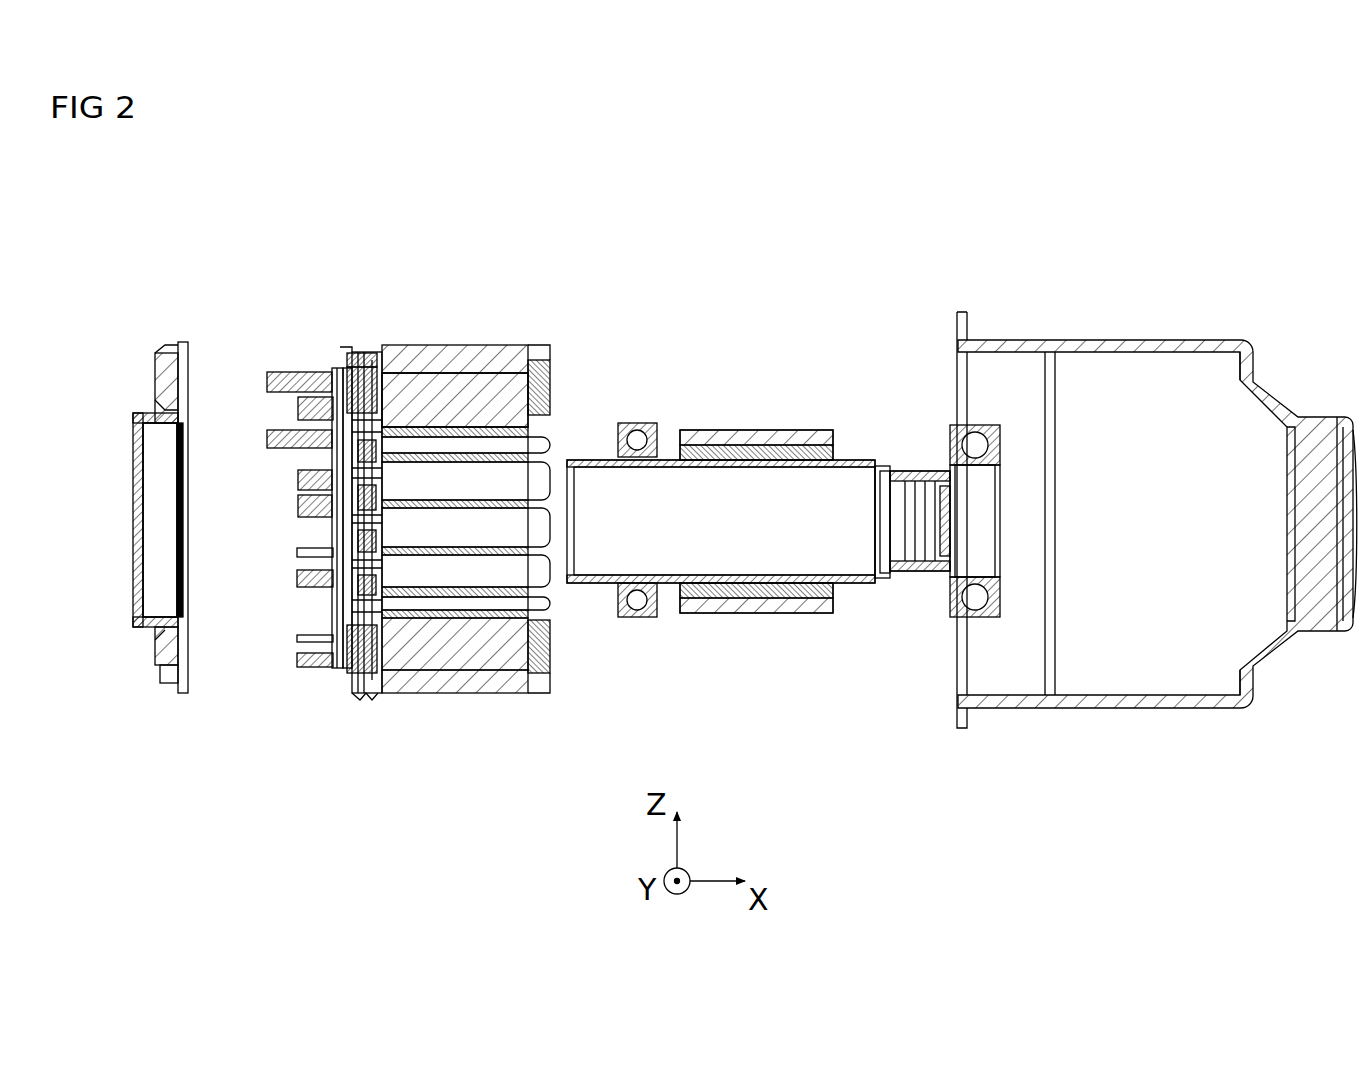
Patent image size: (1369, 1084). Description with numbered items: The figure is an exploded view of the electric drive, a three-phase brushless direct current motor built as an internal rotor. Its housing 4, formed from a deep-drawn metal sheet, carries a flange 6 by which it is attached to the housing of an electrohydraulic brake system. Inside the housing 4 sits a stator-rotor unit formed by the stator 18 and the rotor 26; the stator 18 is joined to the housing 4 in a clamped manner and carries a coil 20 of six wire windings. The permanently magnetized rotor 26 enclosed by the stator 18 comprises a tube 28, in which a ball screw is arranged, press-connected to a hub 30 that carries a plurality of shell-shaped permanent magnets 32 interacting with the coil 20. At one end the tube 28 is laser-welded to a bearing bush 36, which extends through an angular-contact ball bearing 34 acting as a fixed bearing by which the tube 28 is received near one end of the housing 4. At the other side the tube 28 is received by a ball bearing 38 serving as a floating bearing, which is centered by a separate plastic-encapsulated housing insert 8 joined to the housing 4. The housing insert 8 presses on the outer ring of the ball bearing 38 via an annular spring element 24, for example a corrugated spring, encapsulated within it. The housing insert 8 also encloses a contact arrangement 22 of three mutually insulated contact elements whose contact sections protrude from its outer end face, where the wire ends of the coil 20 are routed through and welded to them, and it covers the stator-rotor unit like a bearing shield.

The housing 4 is at (1130, 340).
The flange 6 is at (958, 318).
The housing insert 8 is at (172, 330).
The stator 18 is at (437, 330).
The coil 20 is at (480, 372).
The contact arrangement 22 is at (302, 690).
The spring element 24 is at (205, 482).
The rotor 26 is at (707, 400).
The tube 28 is at (770, 613).
The hub 30 is at (798, 430).
The permanent magnets 32 is at (738, 430).
The angular-contact ball bearing 34 is at (938, 438).
The bearing bush 36 is at (924, 600).
The ball bearing 38 is at (646, 632).